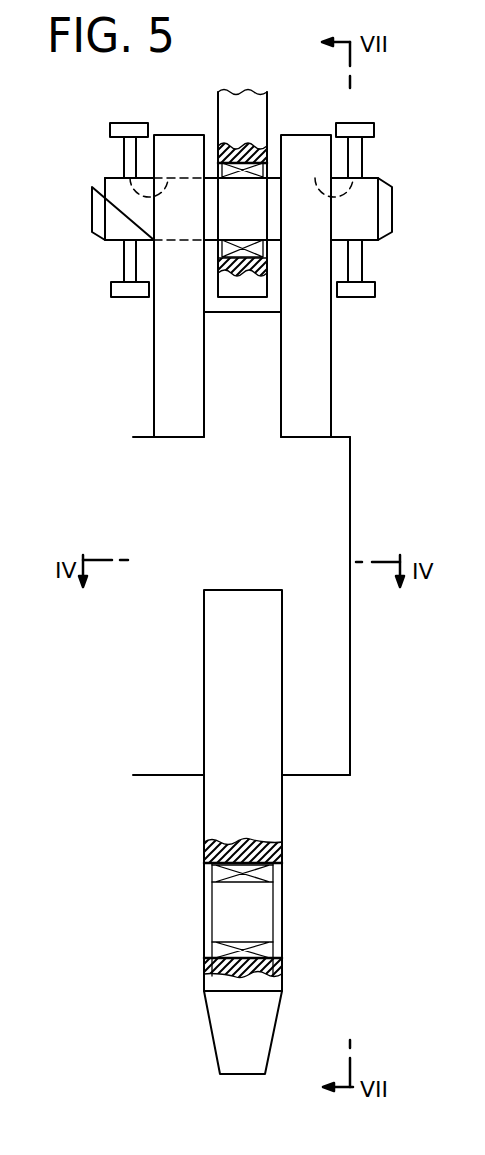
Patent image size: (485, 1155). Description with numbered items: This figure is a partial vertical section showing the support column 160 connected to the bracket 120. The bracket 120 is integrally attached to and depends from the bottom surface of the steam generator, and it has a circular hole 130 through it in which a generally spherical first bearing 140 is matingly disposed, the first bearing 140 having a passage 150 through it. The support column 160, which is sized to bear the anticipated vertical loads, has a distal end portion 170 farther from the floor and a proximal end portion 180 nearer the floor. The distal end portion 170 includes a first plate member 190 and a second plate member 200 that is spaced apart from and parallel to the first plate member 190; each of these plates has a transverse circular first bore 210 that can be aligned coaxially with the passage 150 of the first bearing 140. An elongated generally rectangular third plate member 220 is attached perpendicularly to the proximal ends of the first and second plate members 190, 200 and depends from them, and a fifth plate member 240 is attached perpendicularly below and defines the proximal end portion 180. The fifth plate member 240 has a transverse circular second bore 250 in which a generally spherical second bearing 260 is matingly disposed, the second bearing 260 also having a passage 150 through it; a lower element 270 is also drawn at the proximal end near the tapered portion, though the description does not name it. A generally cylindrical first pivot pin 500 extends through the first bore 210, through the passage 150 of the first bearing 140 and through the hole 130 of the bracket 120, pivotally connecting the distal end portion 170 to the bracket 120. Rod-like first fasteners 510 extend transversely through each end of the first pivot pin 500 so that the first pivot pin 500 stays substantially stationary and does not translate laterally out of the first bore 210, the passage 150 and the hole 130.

The bracket 120 is at (238, 100).
The circular hole 130 is at (268, 172).
The first bearing 140 is at (218, 143).
The passage 150 is at (238, 178).
The support column 160 is at (133, 472).
The distal end portion 170 is at (154, 378).
The proximal end portion 180 is at (282, 800).
The first plate member 190 is at (331, 380).
The second plate member 200 is at (154, 333).
The first bore 210 is at (128, 174).
The third plate member 220 is at (350, 468).
The fifth plate member 240 is at (204, 830).
The second bore 250 is at (282, 875).
The second bearing 260 is at (273, 912).
The lower seal ring 270 is at (282, 985).
The first pivot pin 500 is at (266, 209).
The first fastener 510 is at (110, 127).